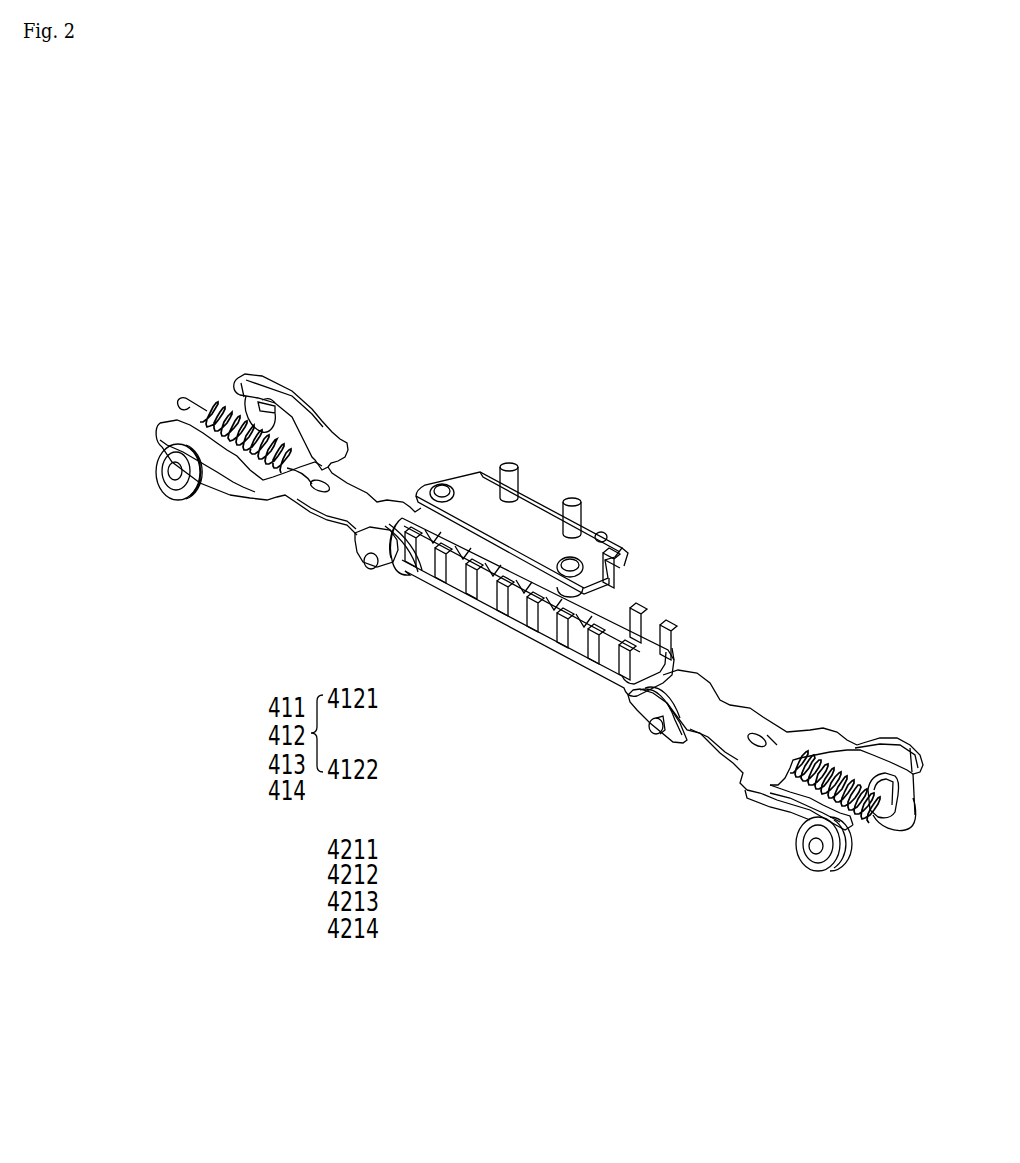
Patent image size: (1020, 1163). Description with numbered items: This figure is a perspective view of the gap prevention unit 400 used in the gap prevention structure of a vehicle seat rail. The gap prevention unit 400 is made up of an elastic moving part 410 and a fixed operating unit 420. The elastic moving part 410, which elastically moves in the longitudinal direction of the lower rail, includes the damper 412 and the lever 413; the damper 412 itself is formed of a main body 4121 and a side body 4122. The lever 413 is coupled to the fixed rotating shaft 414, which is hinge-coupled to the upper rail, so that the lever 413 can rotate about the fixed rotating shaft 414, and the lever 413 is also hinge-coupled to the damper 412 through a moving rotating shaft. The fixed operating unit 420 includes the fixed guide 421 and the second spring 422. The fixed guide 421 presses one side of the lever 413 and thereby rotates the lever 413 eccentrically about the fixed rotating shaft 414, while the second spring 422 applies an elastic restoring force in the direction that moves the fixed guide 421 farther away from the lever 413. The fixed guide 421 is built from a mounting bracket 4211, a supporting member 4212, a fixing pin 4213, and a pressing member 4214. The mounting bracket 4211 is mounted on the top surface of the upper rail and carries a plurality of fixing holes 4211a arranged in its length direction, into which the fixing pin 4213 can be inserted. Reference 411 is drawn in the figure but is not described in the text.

The gap prevention unit 400 is at (203, 752).
The elastic moving part 410 is at (263, 705).
The spring bracket 411 is at (827, 770).
The damper 412 is at (789, 750).
The main body 4121 is at (757, 727).
The side body 4122 is at (787, 800).
The lever 413 is at (648, 710).
The fixed rotating shaft 414 is at (652, 733).
The fixed operating unit 420 is at (263, 888).
The fixed guide 421 is at (323, 843).
The mounting bracket 4211 is at (473, 498).
The fixing hole 4211a is at (601, 537).
The supporting member 4212 is at (533, 578).
The fixing pin 4213 is at (572, 502).
The pressing member 4214 is at (612, 640).
The second spring 422 is at (448, 762).